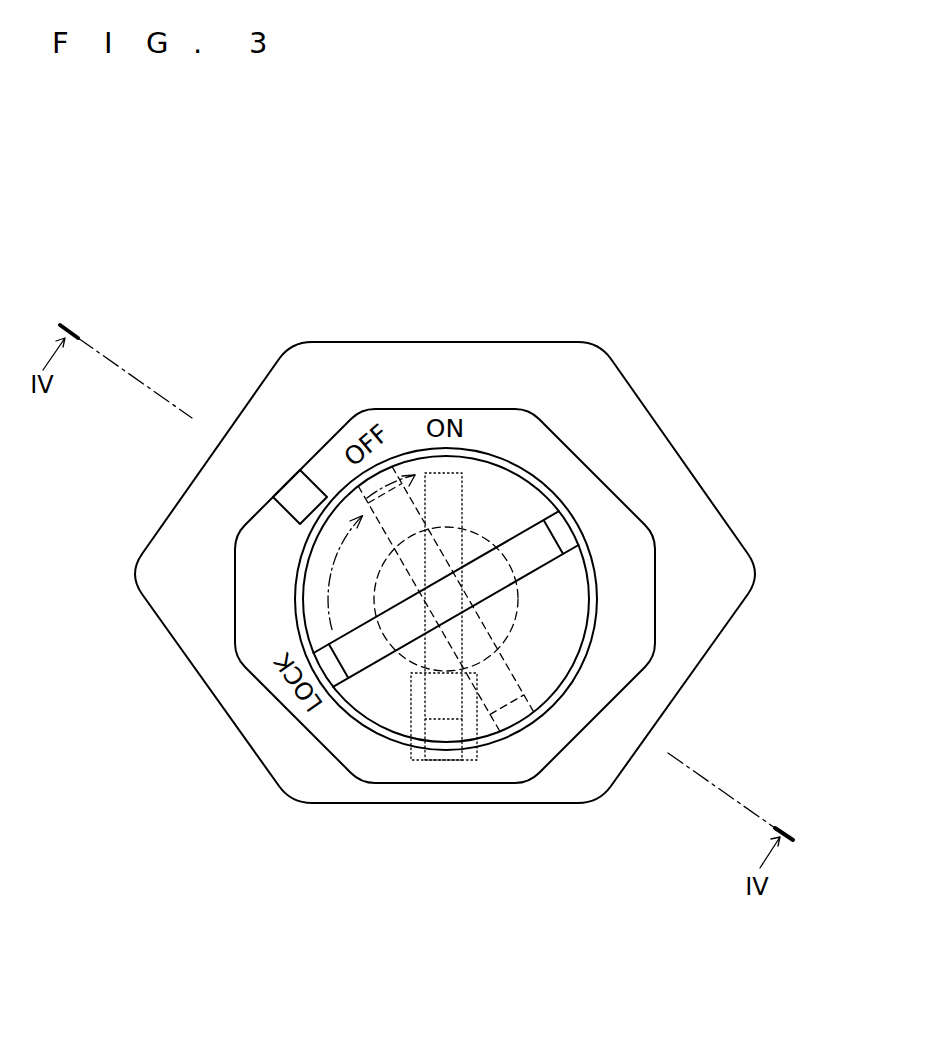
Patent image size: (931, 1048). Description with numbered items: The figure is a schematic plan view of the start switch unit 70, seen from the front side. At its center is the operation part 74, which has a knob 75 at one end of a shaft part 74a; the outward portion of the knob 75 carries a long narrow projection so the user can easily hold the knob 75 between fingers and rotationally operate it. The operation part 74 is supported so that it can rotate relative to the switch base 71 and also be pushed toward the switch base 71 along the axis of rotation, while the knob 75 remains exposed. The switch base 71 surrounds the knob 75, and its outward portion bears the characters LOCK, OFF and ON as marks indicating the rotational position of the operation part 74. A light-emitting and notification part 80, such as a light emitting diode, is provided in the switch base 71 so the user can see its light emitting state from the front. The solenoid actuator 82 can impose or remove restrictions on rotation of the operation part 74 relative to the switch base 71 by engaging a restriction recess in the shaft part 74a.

The start switch unit 70 is at (582, 536).
The switch base 71 is at (653, 542).
The operation part 74 is at (403, 733).
The shaft part 74a is at (518, 600).
The knob 75 is at (518, 472).
The light-emitting and notification part 80 is at (292, 492).
The solenoid actuator 82 is at (472, 717).